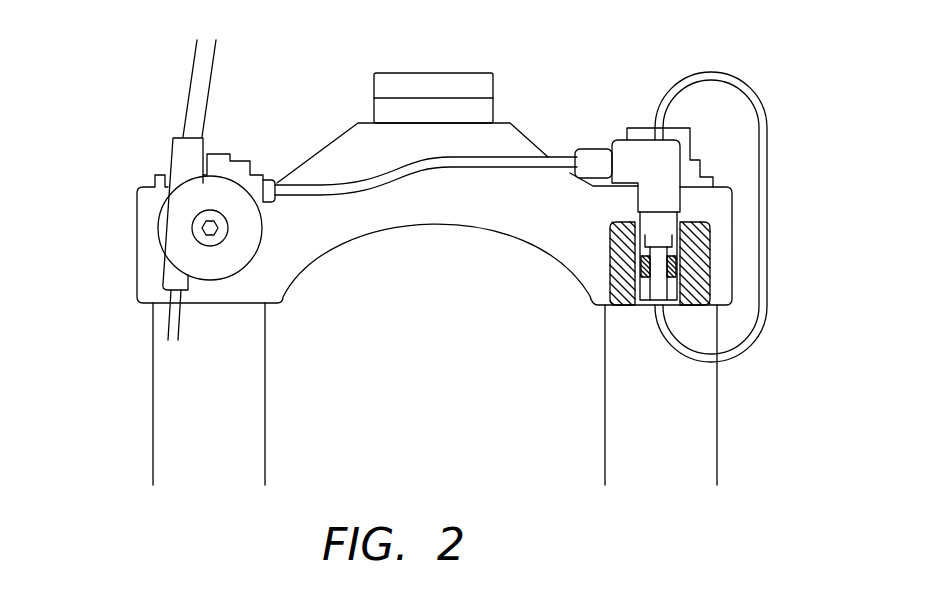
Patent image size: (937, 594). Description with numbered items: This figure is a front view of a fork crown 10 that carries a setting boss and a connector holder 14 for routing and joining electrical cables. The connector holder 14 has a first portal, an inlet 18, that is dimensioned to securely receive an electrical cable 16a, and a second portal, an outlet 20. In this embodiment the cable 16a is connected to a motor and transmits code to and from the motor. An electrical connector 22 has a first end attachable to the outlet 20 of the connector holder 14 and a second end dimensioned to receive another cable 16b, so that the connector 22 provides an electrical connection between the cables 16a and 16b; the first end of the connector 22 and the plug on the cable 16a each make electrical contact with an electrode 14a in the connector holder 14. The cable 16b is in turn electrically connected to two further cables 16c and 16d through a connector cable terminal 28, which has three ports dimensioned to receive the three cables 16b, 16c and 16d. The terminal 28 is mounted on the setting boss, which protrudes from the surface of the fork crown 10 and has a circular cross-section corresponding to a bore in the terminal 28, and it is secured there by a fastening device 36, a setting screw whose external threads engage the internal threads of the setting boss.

The fork crown 10 is at (462, 372).
The connector holder 14 is at (607, 262).
The electrode 14a is at (705, 232).
The electrical cable 16a is at (745, 350).
The cable 16b is at (452, 168).
The cable 16c is at (188, 88).
The cable 16d is at (172, 316).
The inlet 18 is at (650, 312).
The outlet 20 is at (640, 223).
The electrical connector 22 is at (640, 140).
The connector cable terminal 28 is at (228, 259).
The fastening device 36 is at (214, 229).